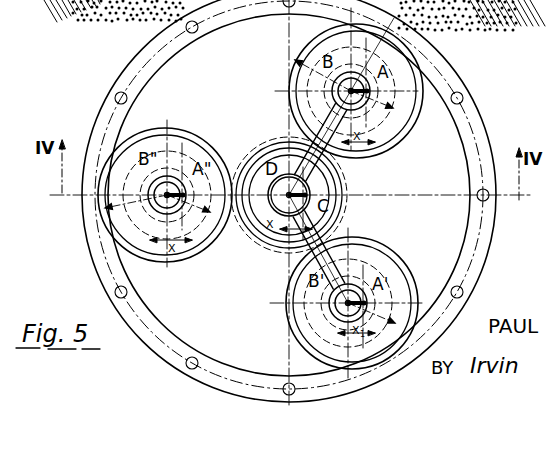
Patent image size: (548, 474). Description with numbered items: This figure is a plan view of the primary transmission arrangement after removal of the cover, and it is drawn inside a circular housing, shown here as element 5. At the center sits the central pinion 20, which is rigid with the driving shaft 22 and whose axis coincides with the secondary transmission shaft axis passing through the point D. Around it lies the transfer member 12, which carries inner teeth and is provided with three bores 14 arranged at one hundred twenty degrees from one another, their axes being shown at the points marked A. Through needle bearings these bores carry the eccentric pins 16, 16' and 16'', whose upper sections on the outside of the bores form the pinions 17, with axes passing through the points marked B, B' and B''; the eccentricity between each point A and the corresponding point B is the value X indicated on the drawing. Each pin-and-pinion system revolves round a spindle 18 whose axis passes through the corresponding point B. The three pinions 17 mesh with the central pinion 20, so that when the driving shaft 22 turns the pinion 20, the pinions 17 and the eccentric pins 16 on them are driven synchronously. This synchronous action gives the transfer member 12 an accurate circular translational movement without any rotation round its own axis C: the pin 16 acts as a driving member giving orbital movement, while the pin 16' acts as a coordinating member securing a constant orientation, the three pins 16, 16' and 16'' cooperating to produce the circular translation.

The housing 5 is at (473, 283).
The transfer member 12 is at (452, 225).
The bores 14 is at (193, 155).
The eccentric pin 16 is at (385, 91).
The eccentric pin 16' is at (384, 307).
The eccentric pin 16'' is at (138, 214).
The pinions 17 is at (199, 254).
The spindle 18 is at (153, 209).
The central pinion 20 is at (344, 185).
The driving shaft 22 is at (275, 203).